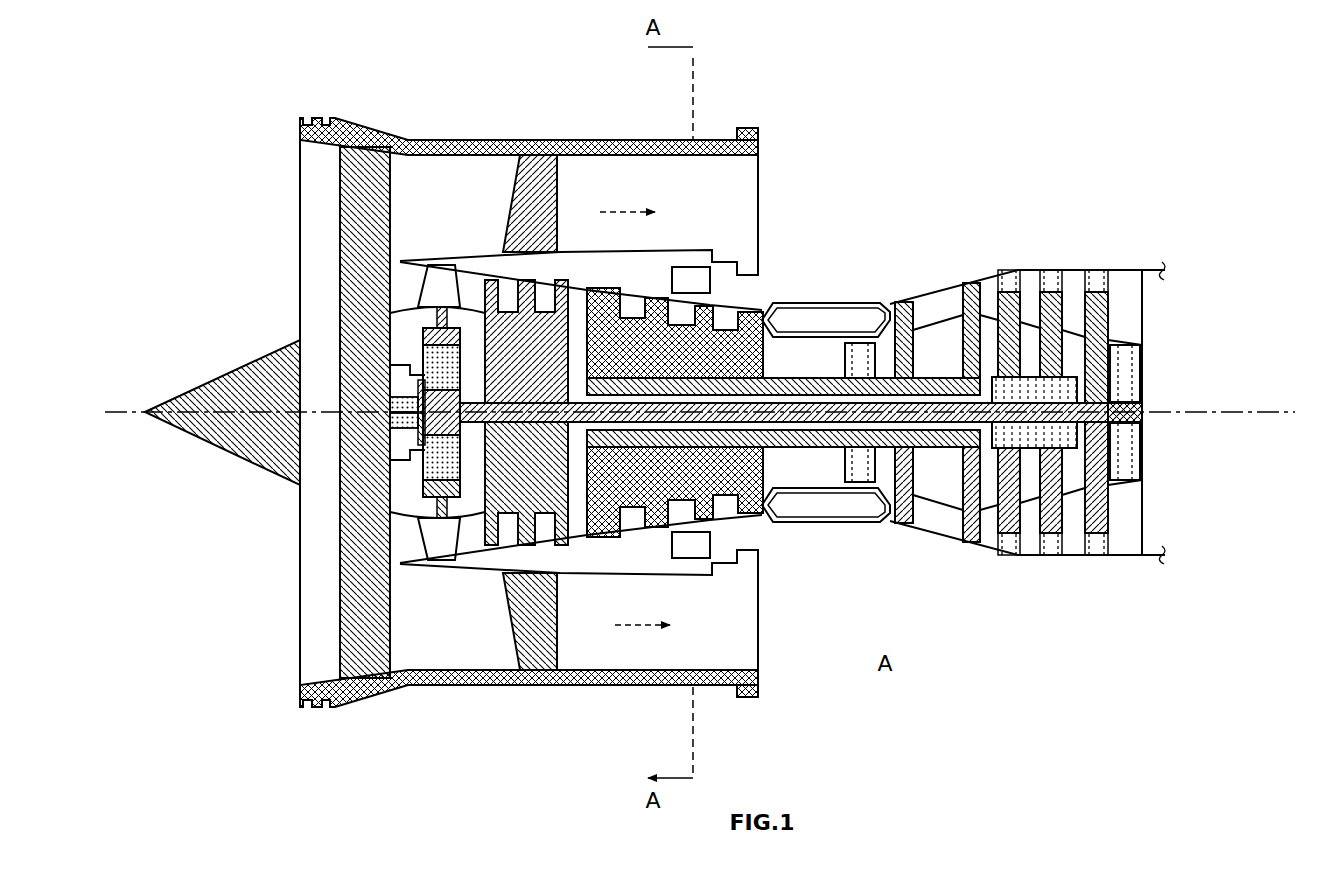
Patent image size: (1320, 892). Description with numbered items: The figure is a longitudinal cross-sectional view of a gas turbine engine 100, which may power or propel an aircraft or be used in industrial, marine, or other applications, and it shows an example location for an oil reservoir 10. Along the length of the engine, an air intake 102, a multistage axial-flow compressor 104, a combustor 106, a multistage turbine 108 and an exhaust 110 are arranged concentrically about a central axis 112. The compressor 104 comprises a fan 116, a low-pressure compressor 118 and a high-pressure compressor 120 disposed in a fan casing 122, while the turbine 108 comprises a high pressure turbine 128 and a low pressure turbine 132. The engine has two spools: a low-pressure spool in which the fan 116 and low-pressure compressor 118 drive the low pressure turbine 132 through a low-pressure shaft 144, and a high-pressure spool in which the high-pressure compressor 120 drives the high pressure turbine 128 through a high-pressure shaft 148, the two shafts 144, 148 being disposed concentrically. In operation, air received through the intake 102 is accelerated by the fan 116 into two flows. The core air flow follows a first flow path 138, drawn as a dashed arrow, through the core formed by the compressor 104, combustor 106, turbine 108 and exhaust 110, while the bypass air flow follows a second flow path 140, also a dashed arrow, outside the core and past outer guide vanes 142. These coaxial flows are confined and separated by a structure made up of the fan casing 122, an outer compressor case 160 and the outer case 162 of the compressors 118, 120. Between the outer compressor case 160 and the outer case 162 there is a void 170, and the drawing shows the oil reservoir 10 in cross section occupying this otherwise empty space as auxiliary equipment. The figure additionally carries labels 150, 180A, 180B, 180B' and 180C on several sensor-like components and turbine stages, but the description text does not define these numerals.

The gas turbine engine 100 is at (1226, 196).
The air intake 102 is at (268, 548).
The multistage axial-flow compressor 104 is at (543, 746).
The combustor 106 is at (830, 505).
The multistage turbine 108 is at (1031, 662).
The exhaust 110 is at (1202, 526).
The central axis 112 is at (136, 410).
The fan 116 is at (340, 242).
The low-pressure compressor 118 is at (560, 545).
The high-pressure compressor 120 is at (746, 310).
The fan casing 122 is at (355, 132).
The high pressure turbine 128 is at (938, 285).
The low pressure turbine 132 is at (1073, 565).
The first flow path 138 is at (632, 305).
The second flow path 140 is at (612, 198).
The outer guide vanes 142 is at (537, 185).
The low-pressure shaft 144 is at (472, 423).
The high-pressure shaft 148 is at (794, 378).
The turbine blades 150 is at (1096, 290).
The outer compressor case 160 is at (706, 578).
The outer case 162 is at (812, 332).
The void 170 is at (584, 262).
The oil reservoir 10 is at (712, 270).
The sensor 180A is at (412, 478).
The sensor 180B is at (876, 376).
The sensor 180B' is at (1034, 332).
The sensor 180C is at (1143, 350).